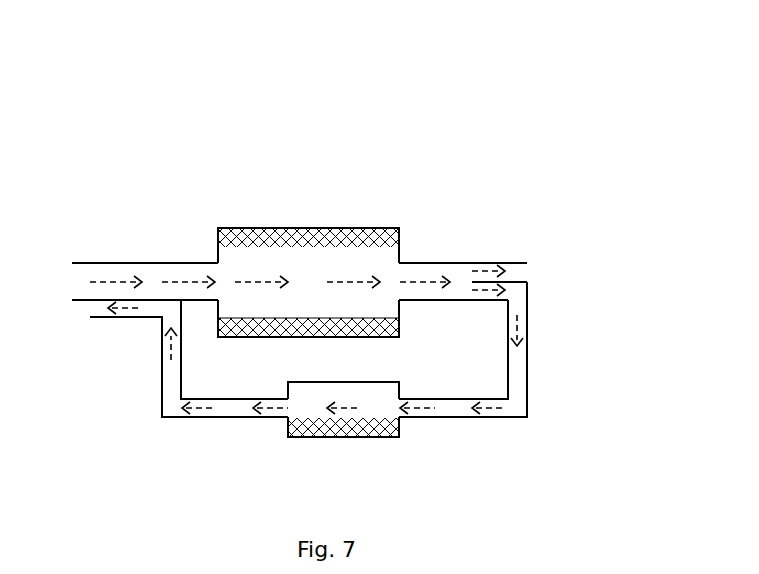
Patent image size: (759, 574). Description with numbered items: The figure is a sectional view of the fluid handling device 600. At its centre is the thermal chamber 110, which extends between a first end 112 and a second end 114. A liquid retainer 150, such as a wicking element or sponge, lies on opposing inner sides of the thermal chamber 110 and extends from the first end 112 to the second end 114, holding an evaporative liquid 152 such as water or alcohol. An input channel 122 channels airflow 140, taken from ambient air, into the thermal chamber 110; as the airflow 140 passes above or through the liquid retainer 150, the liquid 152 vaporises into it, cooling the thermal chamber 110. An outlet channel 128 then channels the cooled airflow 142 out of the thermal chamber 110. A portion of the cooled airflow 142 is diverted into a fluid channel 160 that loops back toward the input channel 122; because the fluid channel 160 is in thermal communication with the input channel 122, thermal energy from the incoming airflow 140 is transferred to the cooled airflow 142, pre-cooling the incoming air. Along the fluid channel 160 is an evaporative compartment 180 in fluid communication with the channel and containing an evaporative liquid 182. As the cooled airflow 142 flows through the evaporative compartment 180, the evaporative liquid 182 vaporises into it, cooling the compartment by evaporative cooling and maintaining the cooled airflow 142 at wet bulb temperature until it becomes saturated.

The fluid handling device 600 is at (686, 85).
The thermal chamber 110 is at (355, 228).
The first end 112 is at (208, 250).
The second end 114 is at (409, 237).
The input channel 122 is at (122, 270).
The outlet channel 128 is at (475, 263).
The airflow 140 is at (105, 280).
The cooled airflow 142 is at (435, 282).
The liquid retainer 150 is at (390, 328).
The liquid 152 is at (348, 328).
The fluid channel 160 is at (425, 417).
The evaporative compartment 180 is at (343, 437).
The evaporative liquid 182 is at (303, 437).